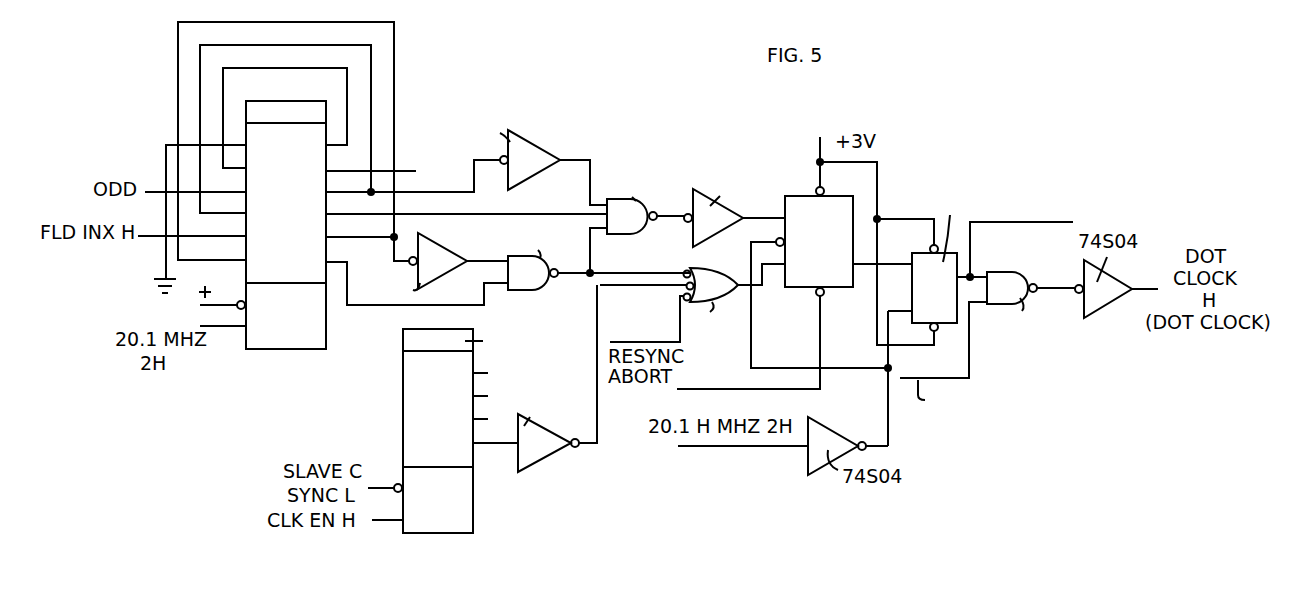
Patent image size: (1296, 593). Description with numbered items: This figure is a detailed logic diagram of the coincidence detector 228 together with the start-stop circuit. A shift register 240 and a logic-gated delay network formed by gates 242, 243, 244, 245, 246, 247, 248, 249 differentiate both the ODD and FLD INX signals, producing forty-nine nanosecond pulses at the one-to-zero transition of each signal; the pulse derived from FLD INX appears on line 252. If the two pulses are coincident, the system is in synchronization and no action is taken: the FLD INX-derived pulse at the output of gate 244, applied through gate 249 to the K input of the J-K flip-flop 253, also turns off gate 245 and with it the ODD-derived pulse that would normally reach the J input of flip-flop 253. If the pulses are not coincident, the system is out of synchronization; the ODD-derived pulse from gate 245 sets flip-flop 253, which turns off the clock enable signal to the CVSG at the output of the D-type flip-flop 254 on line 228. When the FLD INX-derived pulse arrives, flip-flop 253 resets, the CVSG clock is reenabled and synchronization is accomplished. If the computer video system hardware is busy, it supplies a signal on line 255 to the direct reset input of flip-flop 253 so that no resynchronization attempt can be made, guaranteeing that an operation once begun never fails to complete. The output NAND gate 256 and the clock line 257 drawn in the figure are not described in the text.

The coincidence detector 228 is at (970, 240).
The shift register 240 is at (283, 350).
The logic-gated delay network gate 242 is at (412, 262).
The logic-gated delay network gate 243 is at (504, 157).
The gate 244 is at (543, 259).
The gate 245 is at (630, 203).
The logic-gated delay network gate 246 is at (729, 209).
The logic-gated delay network element 247 is at (450, 528).
The logic-gated delay network gate 248 is at (555, 432).
The gate 249 is at (715, 298).
The line 252 is at (762, 288).
The J-K flip-flop 253 is at (843, 279).
The D-type flip-flop 254 is at (930, 261).
The line 255 is at (823, 390).
The NAND gate 256 is at (1012, 301).
The clock signal line (20.1 MHZ 2H) 257 is at (969, 357).